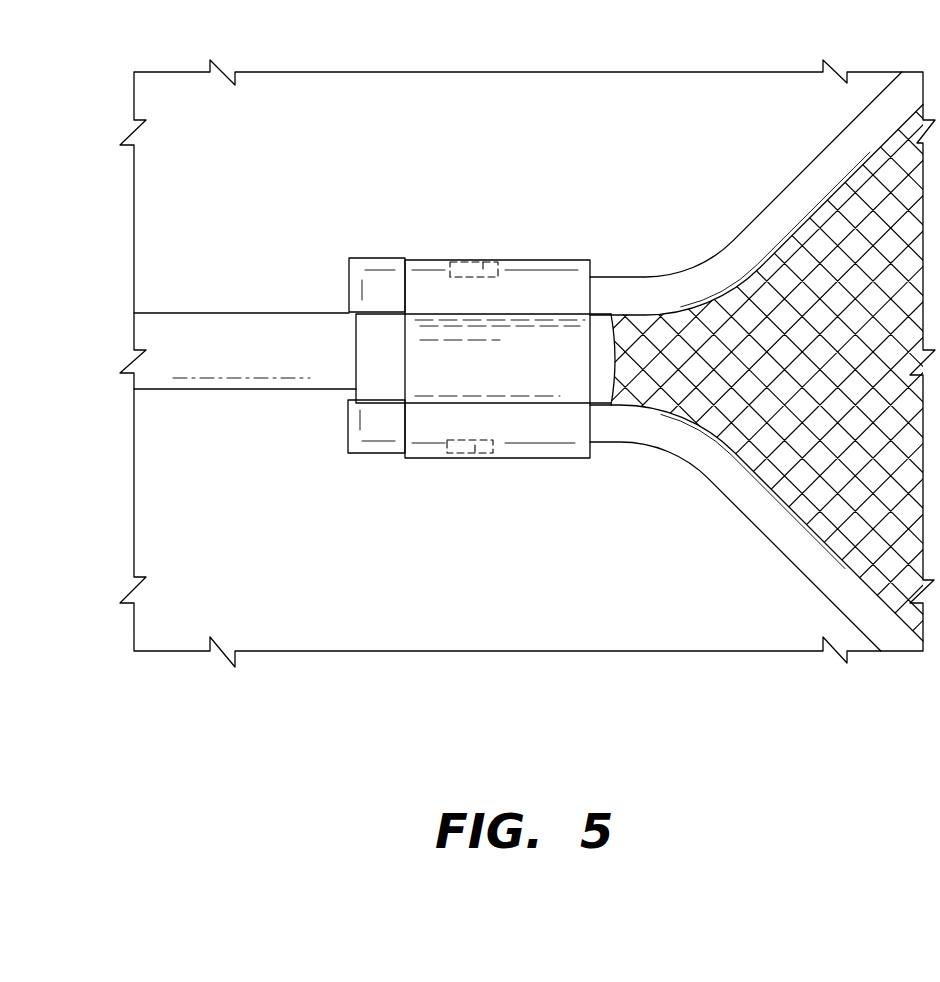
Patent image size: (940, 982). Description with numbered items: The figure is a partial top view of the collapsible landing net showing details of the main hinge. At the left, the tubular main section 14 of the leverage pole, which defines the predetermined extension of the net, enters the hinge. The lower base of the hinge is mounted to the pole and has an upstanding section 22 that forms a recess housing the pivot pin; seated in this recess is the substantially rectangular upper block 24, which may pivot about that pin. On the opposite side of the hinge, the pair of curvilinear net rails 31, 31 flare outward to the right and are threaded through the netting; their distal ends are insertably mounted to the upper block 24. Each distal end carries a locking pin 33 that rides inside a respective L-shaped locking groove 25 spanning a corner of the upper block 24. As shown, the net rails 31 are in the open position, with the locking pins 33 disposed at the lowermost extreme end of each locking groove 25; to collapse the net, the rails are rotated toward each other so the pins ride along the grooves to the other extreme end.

The main section 14 is at (227, 392).
The upstanding section 22 is at (349, 284).
The upper block 24 is at (557, 458).
The locking groove 25 is at (447, 265).
The net rail 31 is at (753, 220).
The locking pin 33 is at (483, 262).